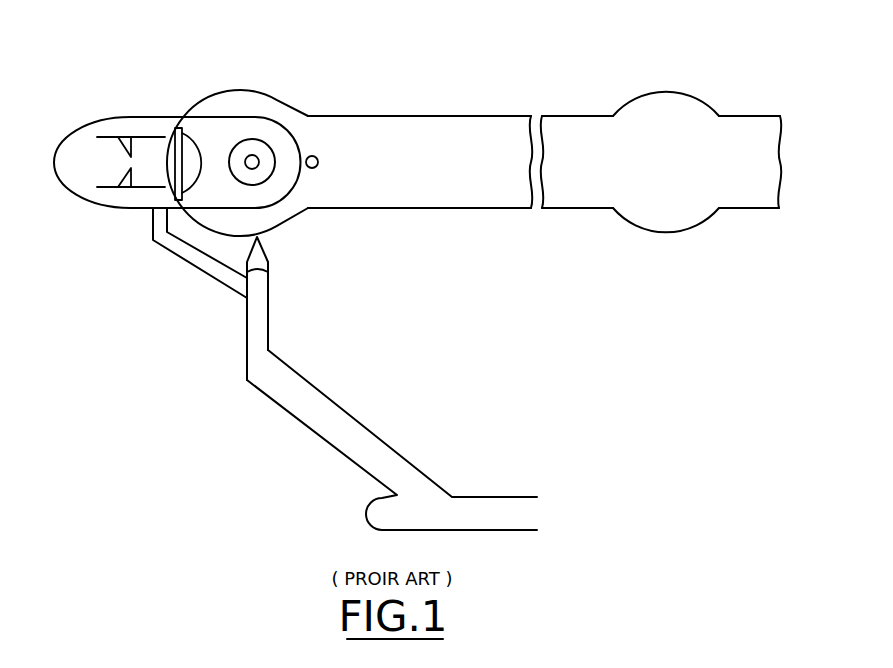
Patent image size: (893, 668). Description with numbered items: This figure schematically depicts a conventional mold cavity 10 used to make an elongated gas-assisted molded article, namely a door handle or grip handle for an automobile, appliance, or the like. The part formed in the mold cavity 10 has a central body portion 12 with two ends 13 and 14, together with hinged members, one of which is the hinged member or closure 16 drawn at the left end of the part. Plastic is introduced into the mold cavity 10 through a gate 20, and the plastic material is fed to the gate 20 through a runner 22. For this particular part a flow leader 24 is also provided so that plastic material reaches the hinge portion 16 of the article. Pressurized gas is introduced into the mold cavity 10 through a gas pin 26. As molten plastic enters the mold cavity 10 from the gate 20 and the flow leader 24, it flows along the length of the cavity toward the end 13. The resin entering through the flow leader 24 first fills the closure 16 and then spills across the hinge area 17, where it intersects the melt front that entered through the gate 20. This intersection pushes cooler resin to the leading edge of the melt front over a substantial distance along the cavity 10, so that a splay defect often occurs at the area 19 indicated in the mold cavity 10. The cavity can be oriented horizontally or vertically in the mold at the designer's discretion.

The mold cavity 10 is at (460, 208).
The central body portion 12 is at (473, 122).
The end 13 is at (675, 107).
The end 14 is at (252, 95).
The hinged member 16 is at (125, 203).
The hinge area 17 is at (192, 147).
The splay defect area 19 is at (580, 122).
The gate 20 is at (265, 248).
The runner 22 is at (318, 425).
The flow leader 24 is at (212, 275).
The gas pin 26 is at (315, 167).